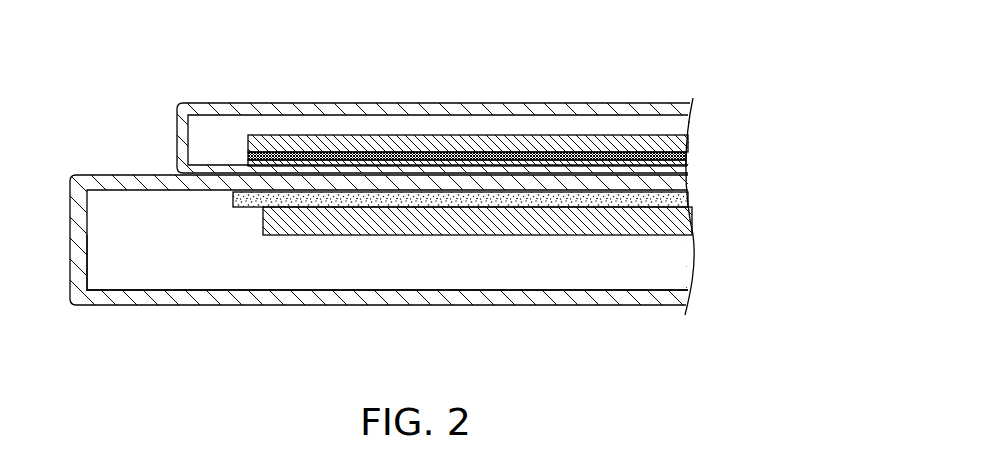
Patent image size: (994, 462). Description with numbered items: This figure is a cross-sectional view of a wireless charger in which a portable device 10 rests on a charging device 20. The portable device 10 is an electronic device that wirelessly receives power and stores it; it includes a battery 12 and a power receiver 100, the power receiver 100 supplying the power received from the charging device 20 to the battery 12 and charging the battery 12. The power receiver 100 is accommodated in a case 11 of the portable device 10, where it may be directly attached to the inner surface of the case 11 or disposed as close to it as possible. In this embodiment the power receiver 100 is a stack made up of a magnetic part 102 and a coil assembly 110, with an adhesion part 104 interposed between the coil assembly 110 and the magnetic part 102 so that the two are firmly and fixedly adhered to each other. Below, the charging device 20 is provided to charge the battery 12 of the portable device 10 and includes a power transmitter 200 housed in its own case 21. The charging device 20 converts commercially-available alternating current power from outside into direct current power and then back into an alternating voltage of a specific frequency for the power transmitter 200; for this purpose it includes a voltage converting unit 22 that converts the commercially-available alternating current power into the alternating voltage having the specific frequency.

The portable device 10 is at (466, 103).
The case 11 is at (238, 168).
The battery 12 is at (688, 137).
The charging device 20 is at (468, 308).
The case 21 is at (193, 296).
The voltage converting unit 22 is at (693, 229).
The power receiver 100 is at (535, 172).
The magnetic part 102 is at (686, 154).
The adhesion part 104 is at (686, 162).
The coil assembly 110 is at (688, 197).
The power transmitter 200 is at (692, 220).